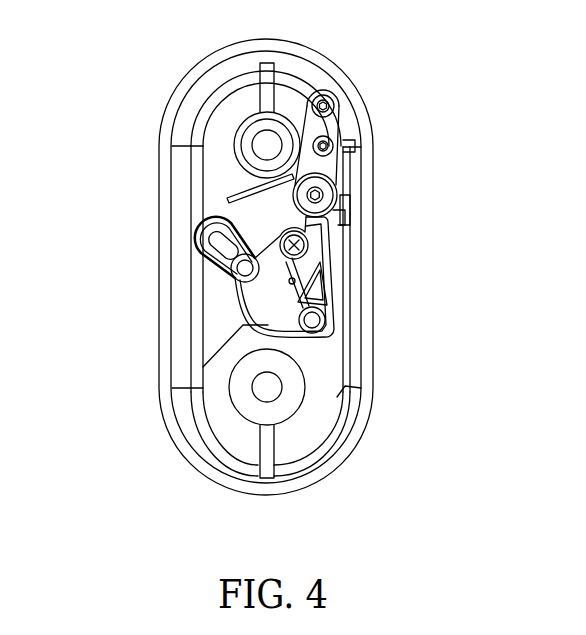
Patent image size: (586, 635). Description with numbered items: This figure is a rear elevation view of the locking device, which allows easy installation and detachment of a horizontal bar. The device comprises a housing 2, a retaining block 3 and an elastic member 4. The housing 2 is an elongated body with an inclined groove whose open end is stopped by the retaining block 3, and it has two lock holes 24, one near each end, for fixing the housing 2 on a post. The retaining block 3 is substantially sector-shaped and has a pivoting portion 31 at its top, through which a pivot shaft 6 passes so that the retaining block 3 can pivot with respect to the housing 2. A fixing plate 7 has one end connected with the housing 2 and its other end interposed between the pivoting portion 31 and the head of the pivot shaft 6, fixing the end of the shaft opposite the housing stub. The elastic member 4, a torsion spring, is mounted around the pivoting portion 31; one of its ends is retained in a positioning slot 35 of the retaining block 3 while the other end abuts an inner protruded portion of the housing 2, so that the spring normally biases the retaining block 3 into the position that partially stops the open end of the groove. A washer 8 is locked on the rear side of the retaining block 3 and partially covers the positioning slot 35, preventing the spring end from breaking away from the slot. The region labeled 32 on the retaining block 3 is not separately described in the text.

The housing 2 is at (190, 78).
The lock holes 24 is at (267, 145).
The fixing plate 7 is at (325, 128).
The pivot shaft 6 is at (333, 188).
The elastic member 4 is at (342, 200).
The pivoting portion 31 is at (333, 217).
The washer 8 is at (290, 242).
The pad 32 is at (215, 252).
The retaining block 3 is at (265, 297).
The positioning slot 35 is at (298, 285).